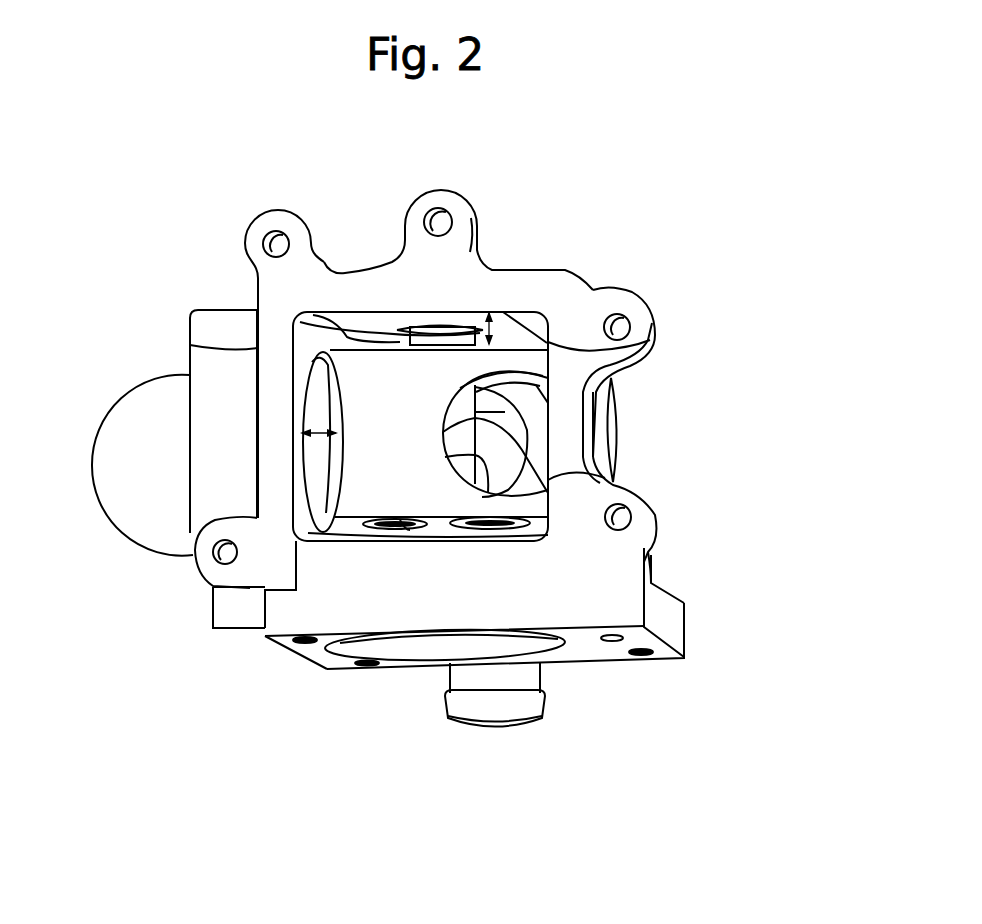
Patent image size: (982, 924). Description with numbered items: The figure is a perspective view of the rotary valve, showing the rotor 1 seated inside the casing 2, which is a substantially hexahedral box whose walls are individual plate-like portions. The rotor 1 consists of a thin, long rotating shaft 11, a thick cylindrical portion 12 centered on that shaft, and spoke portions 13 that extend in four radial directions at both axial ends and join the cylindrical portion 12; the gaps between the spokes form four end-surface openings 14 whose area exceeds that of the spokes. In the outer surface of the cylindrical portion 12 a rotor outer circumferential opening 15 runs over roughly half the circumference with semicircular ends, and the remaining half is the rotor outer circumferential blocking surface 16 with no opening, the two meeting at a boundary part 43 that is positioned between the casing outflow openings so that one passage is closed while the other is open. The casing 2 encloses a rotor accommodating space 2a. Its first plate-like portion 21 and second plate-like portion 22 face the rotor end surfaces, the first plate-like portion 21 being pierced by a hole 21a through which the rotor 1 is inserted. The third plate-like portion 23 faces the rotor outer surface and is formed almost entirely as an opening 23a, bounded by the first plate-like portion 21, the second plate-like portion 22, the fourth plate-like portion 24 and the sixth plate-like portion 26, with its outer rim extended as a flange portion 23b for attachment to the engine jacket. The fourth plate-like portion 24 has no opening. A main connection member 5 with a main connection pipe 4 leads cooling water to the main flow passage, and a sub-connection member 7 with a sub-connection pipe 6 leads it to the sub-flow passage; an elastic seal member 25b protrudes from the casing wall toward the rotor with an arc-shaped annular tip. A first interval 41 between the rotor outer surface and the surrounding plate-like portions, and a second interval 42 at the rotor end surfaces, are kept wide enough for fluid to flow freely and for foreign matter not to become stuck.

The rotor 1 is at (356, 375).
The casing 2 is at (462, 429).
The rotor accommodating space 2a is at (555, 345).
The main connection pipe 4 is at (162, 542).
The main connection member 5 is at (213, 330).
The sub-connection pipe 6 is at (527, 681).
The sub-connection member 7 is at (622, 447).
The rotating shaft 11 is at (453, 333).
The cylindrical portion 12 is at (338, 503).
The spoke portions 13 is at (405, 522).
The openings 14 is at (418, 530).
The rotor outer circumferential opening 15 is at (485, 498).
The rotor outer circumferential blocking surface 16 is at (355, 402).
The first plate-like portion 21 is at (330, 666).
The hole 21a is at (432, 652).
The second plate-like portion 22 is at (390, 323).
The third plate-like portion 23 is at (577, 317).
The opening 23a is at (305, 515).
The flange portion 23b is at (298, 242).
The fourth plate-like portion 24 is at (610, 427).
The seal member 25b is at (600, 472).
The sixth plate-like portion 26 is at (305, 341).
The first interval 41 is at (301, 434).
The second interval 42 is at (495, 345).
The boundary part 43 is at (540, 483).